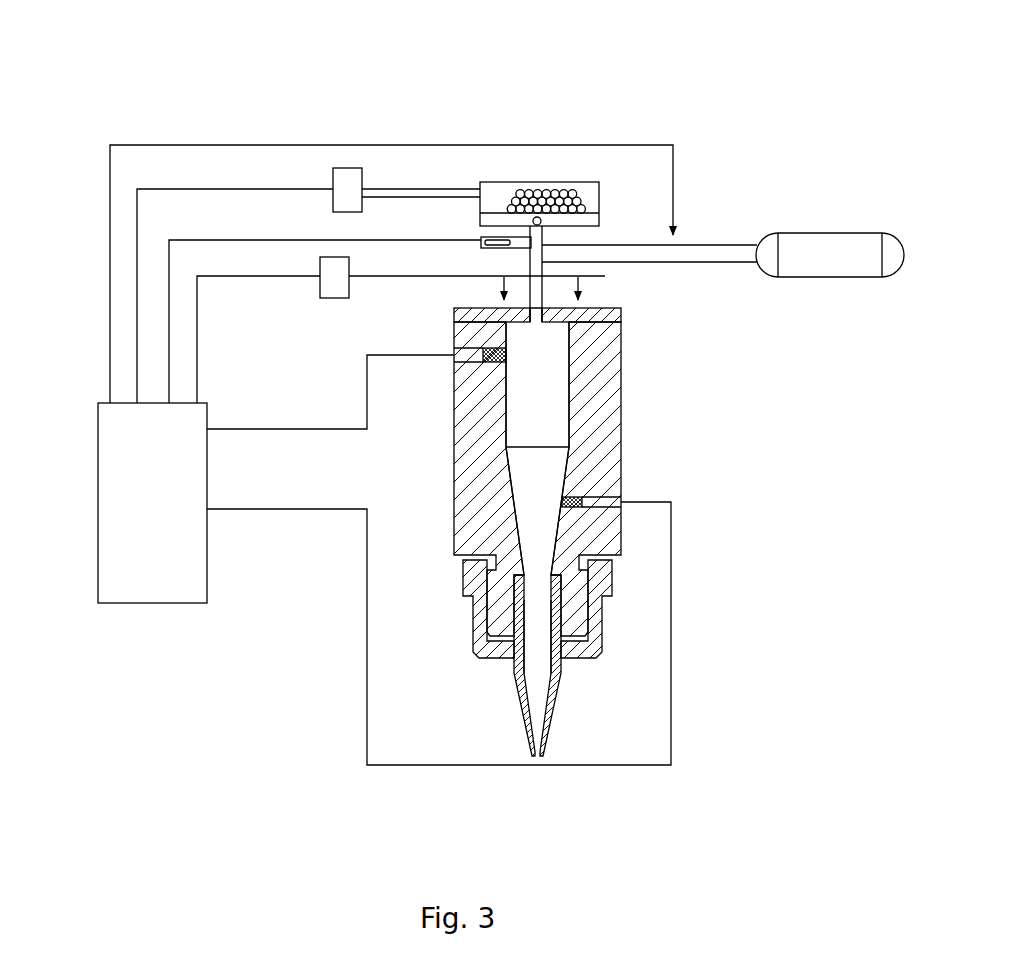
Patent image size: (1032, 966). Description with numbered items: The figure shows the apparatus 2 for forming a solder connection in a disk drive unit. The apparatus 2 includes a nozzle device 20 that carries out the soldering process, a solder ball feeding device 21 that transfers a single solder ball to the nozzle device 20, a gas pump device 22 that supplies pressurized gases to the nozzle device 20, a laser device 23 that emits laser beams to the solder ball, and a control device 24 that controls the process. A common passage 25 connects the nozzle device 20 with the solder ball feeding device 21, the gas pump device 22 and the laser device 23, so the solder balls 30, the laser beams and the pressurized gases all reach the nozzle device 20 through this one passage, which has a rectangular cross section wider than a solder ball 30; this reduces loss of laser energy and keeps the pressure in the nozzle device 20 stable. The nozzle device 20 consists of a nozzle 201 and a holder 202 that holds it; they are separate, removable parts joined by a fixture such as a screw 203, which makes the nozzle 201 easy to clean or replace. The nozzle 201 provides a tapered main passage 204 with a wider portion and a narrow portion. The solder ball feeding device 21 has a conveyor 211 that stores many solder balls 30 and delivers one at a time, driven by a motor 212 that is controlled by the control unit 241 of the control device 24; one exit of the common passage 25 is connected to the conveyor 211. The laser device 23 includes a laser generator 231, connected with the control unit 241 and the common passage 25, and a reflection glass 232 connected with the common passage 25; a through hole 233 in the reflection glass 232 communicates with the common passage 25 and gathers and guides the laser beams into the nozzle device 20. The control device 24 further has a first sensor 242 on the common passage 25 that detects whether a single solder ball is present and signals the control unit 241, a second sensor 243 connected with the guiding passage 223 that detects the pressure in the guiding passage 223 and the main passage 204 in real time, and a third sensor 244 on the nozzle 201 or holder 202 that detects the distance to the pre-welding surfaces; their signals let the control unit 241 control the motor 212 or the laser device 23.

The apparatus 2 is at (149, 41).
The nozzle device 20 is at (655, 481).
The nozzle 201 is at (563, 702).
The holder 202 is at (599, 454).
The screw 203 is at (594, 610).
The main passage 204 is at (541, 652).
The solder ball feeding device 21 is at (561, 170).
The conveyor 211 is at (490, 183).
The motor 212 is at (348, 183).
The gas pump device 22 is at (818, 245).
The guiding passage 223 is at (536, 423).
The laser device 23 is at (308, 302).
The laser generator 231 is at (331, 273).
The reflection glass 232 is at (587, 313).
The through hole 233 is at (536, 318).
The control device 24 is at (73, 552).
The control unit 241 is at (176, 510).
The first sensor 242 is at (490, 239).
The second sensor 243 is at (506, 357).
The third sensor 244 is at (588, 507).
The common passage 25 is at (542, 265).
The solder ball 30 is at (580, 200).